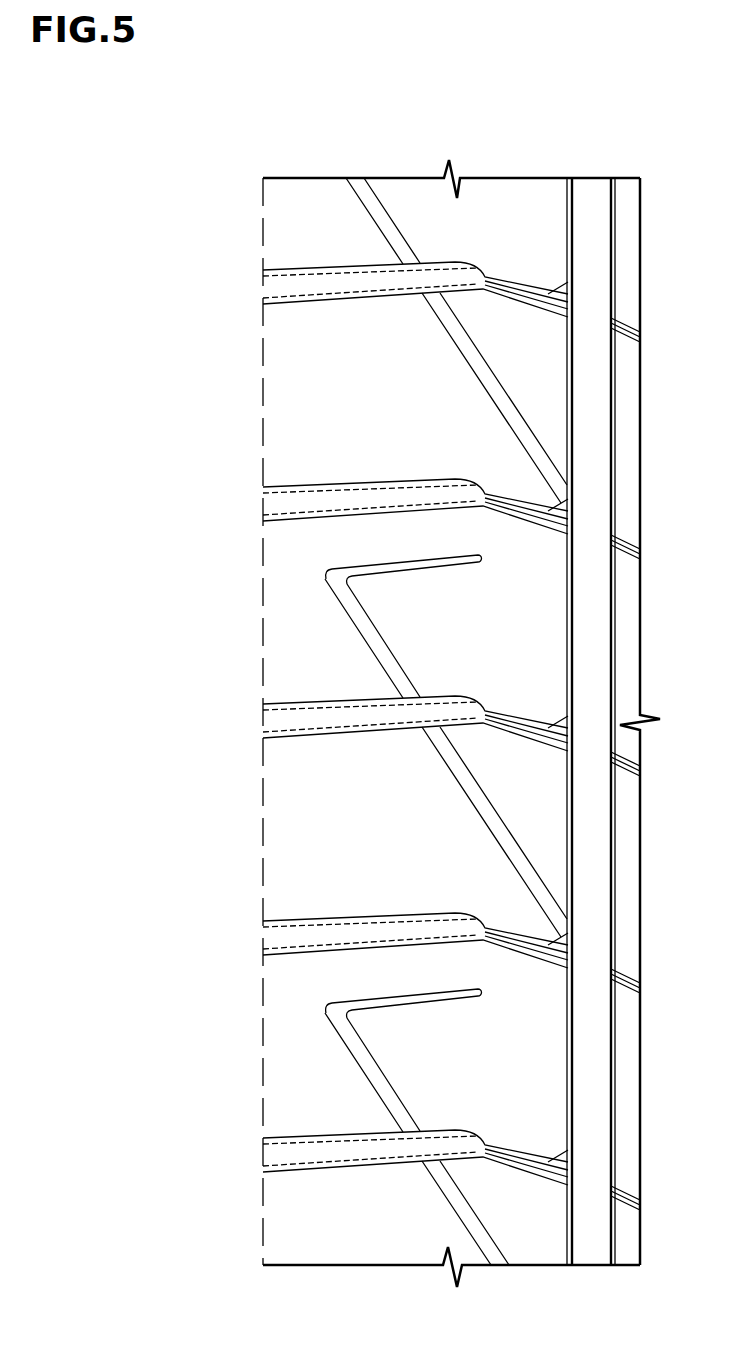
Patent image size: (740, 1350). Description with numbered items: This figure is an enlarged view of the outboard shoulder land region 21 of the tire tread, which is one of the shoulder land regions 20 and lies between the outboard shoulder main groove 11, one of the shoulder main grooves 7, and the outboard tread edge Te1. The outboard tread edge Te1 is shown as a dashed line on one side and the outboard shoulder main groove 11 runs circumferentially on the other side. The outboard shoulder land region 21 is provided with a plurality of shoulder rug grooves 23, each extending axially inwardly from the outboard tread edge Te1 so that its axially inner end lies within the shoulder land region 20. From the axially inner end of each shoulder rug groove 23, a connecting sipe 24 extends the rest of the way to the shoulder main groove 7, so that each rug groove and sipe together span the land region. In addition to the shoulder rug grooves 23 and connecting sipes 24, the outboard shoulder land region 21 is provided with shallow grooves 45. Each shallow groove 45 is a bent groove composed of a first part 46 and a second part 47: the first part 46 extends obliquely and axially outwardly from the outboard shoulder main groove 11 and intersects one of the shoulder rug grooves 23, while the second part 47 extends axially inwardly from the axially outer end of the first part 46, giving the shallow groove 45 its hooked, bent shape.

The outboard tread edge Te1 is at (262, 207).
The shoulder main groove 7 is at (601, 680).
The outboard shoulder main groove 11 is at (588, 240).
The shoulder land region 20 is at (456, 299).
The outboard shoulder land region 21 is at (428, 236).
The shoulder rug groove 23 is at (357, 502).
The connecting sipe 24 is at (523, 503).
The shallow groove 45 is at (336, 903).
The first part 46 is at (472, 789).
The second part 47 is at (403, 566).